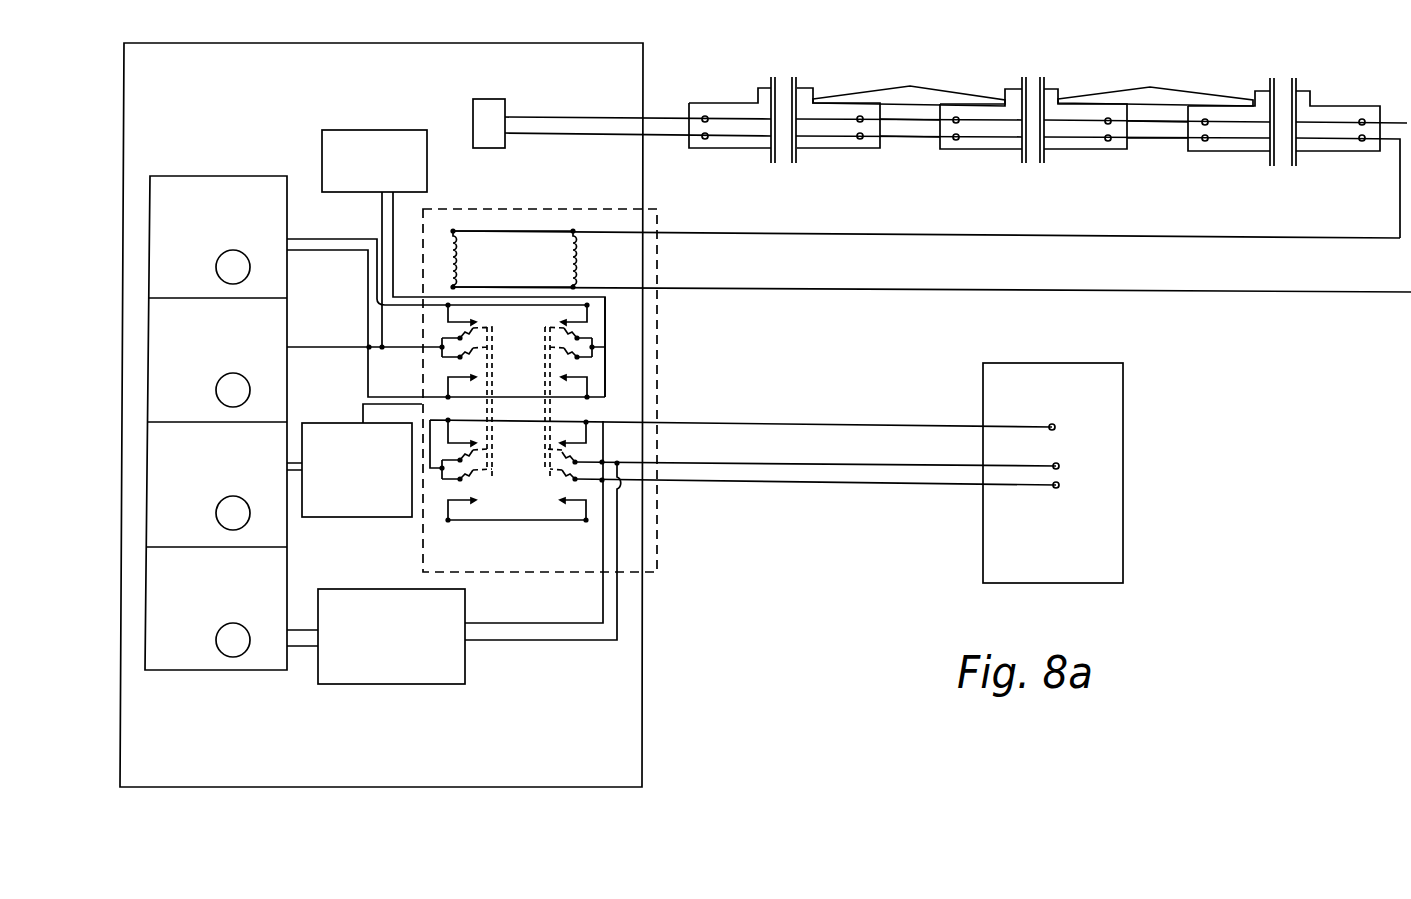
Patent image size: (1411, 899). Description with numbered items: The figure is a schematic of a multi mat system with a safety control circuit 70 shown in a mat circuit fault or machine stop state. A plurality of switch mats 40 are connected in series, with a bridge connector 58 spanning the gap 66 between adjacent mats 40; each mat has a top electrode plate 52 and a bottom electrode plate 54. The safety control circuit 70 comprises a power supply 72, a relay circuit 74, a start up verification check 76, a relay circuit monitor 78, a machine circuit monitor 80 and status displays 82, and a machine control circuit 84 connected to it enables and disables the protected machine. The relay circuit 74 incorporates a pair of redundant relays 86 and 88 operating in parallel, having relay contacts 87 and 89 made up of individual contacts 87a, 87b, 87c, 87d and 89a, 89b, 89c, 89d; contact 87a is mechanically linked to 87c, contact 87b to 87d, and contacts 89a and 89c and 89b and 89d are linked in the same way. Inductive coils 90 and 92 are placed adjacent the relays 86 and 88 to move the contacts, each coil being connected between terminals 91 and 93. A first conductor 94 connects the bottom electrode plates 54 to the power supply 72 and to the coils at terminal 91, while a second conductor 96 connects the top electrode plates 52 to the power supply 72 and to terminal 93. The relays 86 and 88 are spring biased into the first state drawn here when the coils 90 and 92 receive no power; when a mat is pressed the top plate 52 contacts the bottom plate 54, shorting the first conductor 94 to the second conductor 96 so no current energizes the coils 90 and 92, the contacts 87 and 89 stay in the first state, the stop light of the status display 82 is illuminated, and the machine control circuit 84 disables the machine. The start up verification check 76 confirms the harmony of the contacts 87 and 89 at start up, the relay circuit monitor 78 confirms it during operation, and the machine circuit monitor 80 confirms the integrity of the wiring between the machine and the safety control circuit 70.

The switch mat 40 is at (789, 66).
The top electrode plate 52 is at (736, 117).
The bottom electrode plate 54 is at (733, 138).
The bridge connector 58 is at (905, 85).
The gap 66 is at (910, 140).
The safety control circuit 70 is at (440, 46).
The power supply 72 is at (505, 107).
The relay circuit 74 is at (536, 557).
The start up verification check 76 is at (382, 171).
The relay circuit monitor 78 is at (370, 480).
The machine circuit monitor 80 is at (386, 643).
The status displays 82 is at (188, 175).
The machine control circuit 84 is at (1054, 359).
The relay 86 is at (466, 524).
The relay contacts 87 is at (491, 335).
The relay contact 87a is at (460, 338).
The relay contact 87b is at (460, 357).
The relay contact 87c is at (460, 460).
The relay contact 87d is at (460, 479).
The relay 88 is at (601, 523).
The relay contacts 89 is at (566, 329).
The relay contact 89a is at (579, 337).
The relay contact 89b is at (579, 357).
The relay contact 89c is at (578, 461).
The relay contact 89d is at (578, 480).
The inductive coil 90 is at (461, 259).
The terminal 91 is at (453, 231).
The inductive coil 92 is at (569, 257).
The terminal 93 is at (576, 287).
The first conductor 94 is at (818, 224).
The second conductor 96 is at (818, 279).